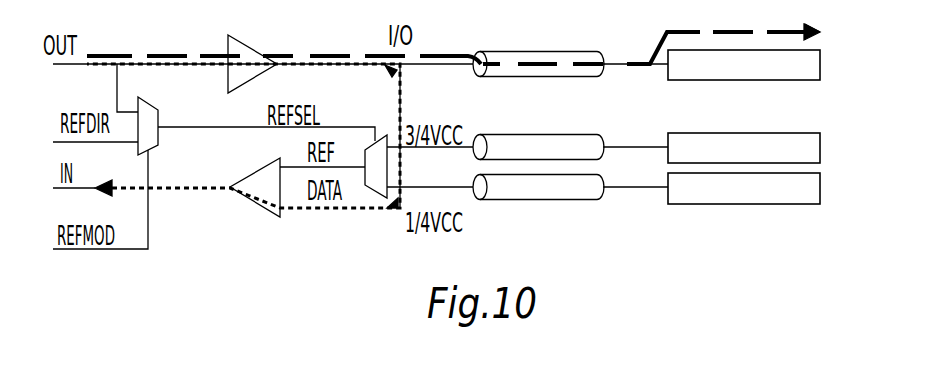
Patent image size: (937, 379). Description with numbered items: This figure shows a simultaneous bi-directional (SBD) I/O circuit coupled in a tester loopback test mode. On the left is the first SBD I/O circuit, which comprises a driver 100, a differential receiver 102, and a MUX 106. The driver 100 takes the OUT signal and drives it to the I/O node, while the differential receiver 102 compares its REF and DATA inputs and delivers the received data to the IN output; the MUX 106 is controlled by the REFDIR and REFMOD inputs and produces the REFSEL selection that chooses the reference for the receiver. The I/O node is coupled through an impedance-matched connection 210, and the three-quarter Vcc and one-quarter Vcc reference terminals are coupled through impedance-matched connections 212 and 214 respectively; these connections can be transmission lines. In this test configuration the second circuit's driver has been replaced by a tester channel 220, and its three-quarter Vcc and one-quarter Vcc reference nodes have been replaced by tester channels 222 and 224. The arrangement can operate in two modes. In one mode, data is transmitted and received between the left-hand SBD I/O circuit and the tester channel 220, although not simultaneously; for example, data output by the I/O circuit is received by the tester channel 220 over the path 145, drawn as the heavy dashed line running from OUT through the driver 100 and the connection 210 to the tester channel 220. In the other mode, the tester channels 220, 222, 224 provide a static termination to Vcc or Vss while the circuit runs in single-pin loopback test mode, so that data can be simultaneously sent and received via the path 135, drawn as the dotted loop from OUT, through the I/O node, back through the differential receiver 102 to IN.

The driver 100 is at (240, 34).
The differential receiver 102 is at (258, 170).
The MUX 106 is at (150, 108).
The path 135 is at (381, 86).
The path 145 is at (672, 28).
The impedance-matched connection 210 is at (547, 51).
The impedance-matched connection 212 is at (545, 134).
The impedance-matched connection 214 is at (542, 200).
The tester channel 220 is at (713, 50).
The tester channel 222 is at (798, 133).
The tester channel 224 is at (797, 204).